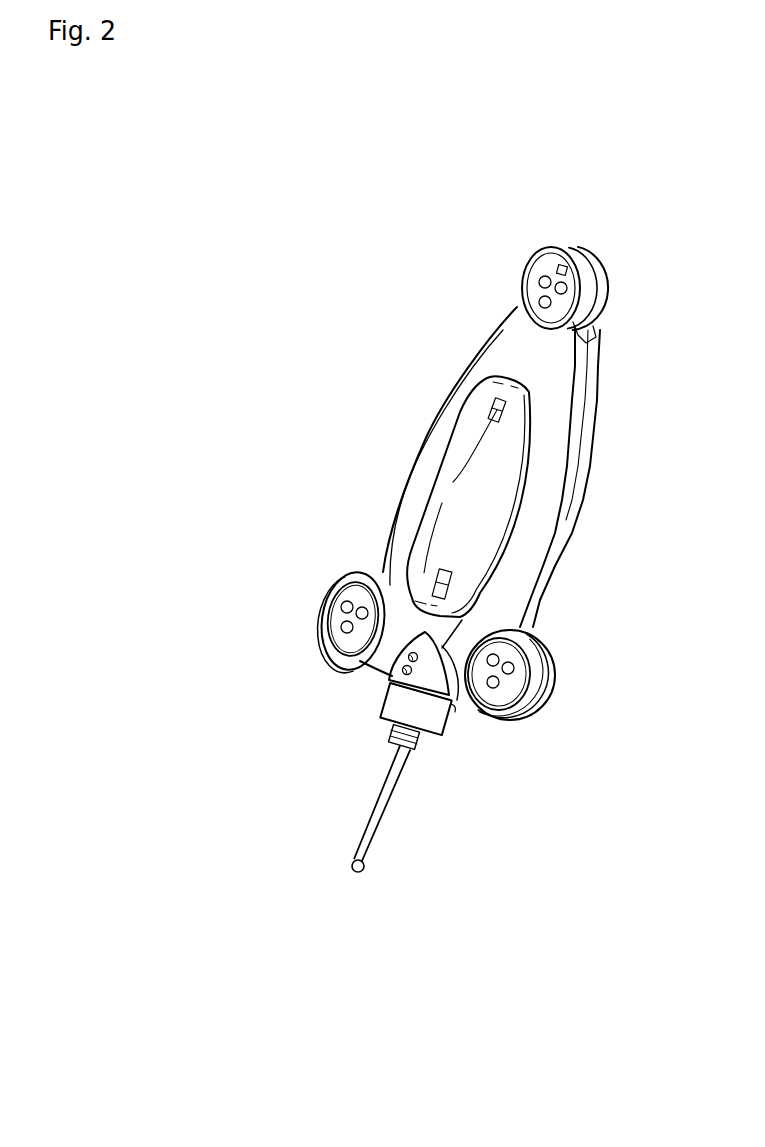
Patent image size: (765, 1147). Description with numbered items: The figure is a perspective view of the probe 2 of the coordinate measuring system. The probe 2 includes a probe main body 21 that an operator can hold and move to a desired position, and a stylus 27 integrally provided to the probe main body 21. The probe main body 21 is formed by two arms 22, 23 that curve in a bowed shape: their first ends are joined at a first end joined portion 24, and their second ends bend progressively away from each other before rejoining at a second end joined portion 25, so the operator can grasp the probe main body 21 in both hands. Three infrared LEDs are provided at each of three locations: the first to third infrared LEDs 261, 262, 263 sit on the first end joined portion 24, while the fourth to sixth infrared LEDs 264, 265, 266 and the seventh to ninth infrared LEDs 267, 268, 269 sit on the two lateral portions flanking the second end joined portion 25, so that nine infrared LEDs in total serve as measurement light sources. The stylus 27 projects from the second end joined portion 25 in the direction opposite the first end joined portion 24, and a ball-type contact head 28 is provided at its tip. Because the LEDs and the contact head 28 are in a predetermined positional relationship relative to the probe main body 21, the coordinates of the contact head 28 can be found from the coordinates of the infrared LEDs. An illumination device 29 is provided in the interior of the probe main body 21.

The probe 2 is at (259, 293).
The probe main body 21 is at (462, 388).
The arm 22 is at (428, 441).
The arm 23 is at (567, 507).
The first end joined portion 24 is at (536, 261).
The second end joined portion 25 is at (380, 574).
The stylus 27 is at (385, 818).
The contact head 28 is at (358, 872).
The illumination device 29 is at (556, 262).
The first infrared LED 261 is at (549, 307).
The second infrared LED 262 is at (567, 288).
The third infrared LED 263 is at (539, 282).
The fourth infrared LED 264 is at (361, 619).
The fifth infrared LED 265 is at (341, 606).
The sixth infrared LED 266 is at (341, 631).
The seventh infrared LED 267 is at (498, 643).
The eighth infrared LED 268 is at (493, 688).
The ninth infrared LED 269 is at (513, 673).